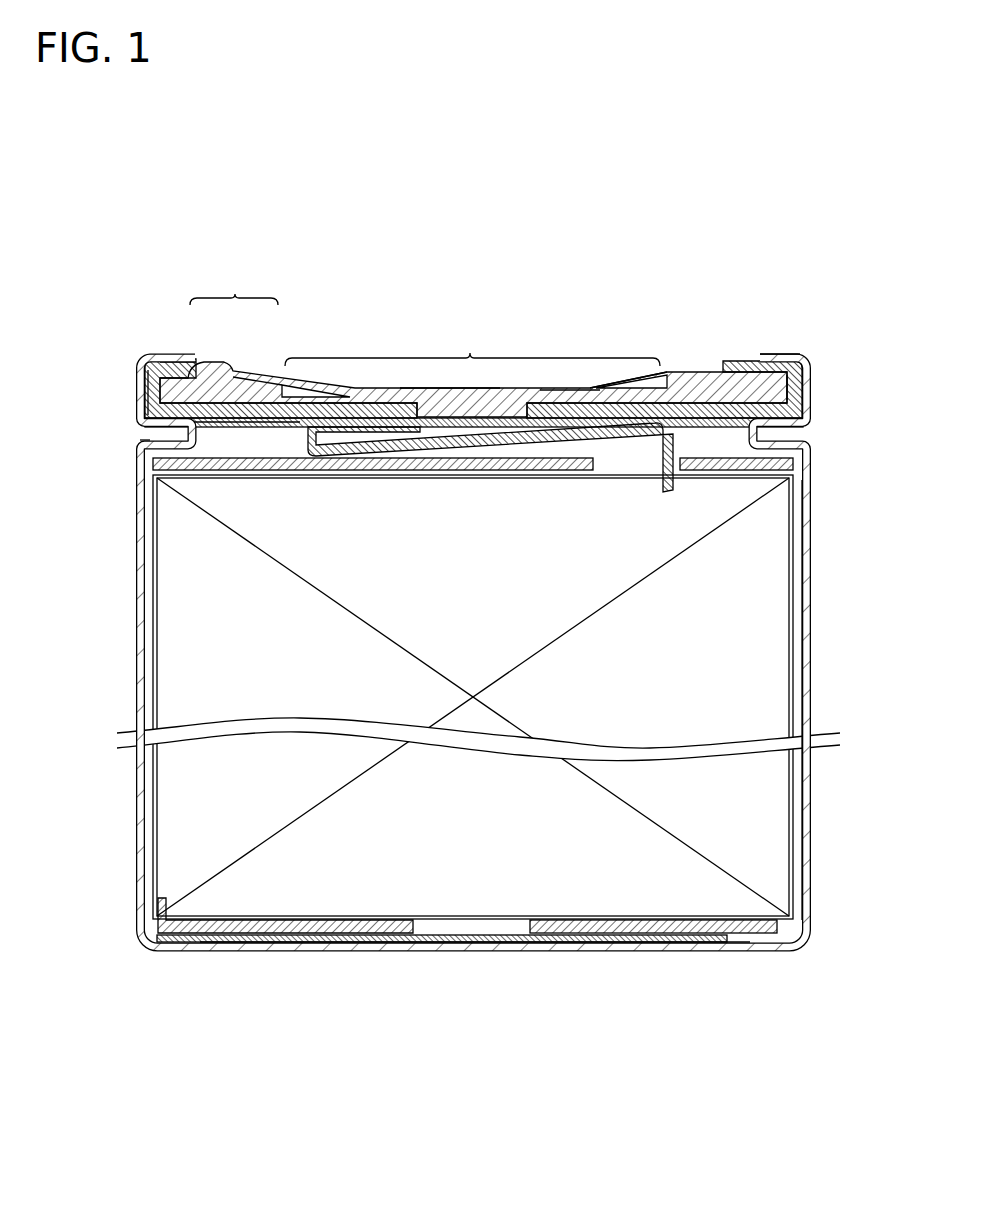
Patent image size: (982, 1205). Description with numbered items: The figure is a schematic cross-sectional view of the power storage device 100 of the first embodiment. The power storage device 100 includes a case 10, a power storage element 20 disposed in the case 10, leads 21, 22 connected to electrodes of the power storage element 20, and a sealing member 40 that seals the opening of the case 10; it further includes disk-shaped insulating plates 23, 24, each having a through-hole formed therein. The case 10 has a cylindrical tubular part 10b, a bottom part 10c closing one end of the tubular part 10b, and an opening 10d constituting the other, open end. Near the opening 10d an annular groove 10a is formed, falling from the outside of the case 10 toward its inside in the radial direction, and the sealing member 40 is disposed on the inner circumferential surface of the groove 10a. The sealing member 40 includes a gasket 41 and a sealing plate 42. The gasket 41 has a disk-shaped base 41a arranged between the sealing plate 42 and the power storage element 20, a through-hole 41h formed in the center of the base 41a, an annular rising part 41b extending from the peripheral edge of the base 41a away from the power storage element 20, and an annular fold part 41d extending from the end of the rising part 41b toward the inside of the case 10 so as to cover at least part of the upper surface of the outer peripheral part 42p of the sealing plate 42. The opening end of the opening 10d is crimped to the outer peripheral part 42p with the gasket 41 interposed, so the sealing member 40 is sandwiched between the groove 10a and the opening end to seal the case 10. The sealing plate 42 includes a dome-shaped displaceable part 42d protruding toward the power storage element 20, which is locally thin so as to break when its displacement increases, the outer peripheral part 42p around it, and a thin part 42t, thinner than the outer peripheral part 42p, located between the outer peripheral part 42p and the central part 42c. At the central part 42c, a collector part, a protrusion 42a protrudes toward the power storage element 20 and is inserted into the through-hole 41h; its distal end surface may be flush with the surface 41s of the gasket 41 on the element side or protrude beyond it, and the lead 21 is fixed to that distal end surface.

The power storage device 100 is at (158, 256).
The case 10 is at (810, 577).
The groove 10a is at (813, 425).
The tubular part 10b is at (813, 705).
The bottom part 10c is at (460, 952).
The opening 10d is at (776, 344).
The power storage element 20 is at (770, 637).
The lead 21 is at (745, 448).
The lead 22 is at (180, 953).
The insulating plate 23 is at (710, 472).
The insulating plate 24 is at (737, 937).
The sealing member 40 is at (234, 286).
The gasket 41 is at (209, 372).
The base 41a is at (148, 428).
The rising part 41b is at (142, 394).
The fold part 41d is at (180, 362).
The through-hole 41h is at (527, 400).
The surface 41s is at (140, 452).
The sealing plate 42 is at (254, 372).
The protrusion 42a is at (445, 388).
The central part 42c is at (574, 392).
The displaceable part 42d is at (472, 346).
The outer peripheral part 42p is at (798, 396).
The thin part 42t is at (633, 376).